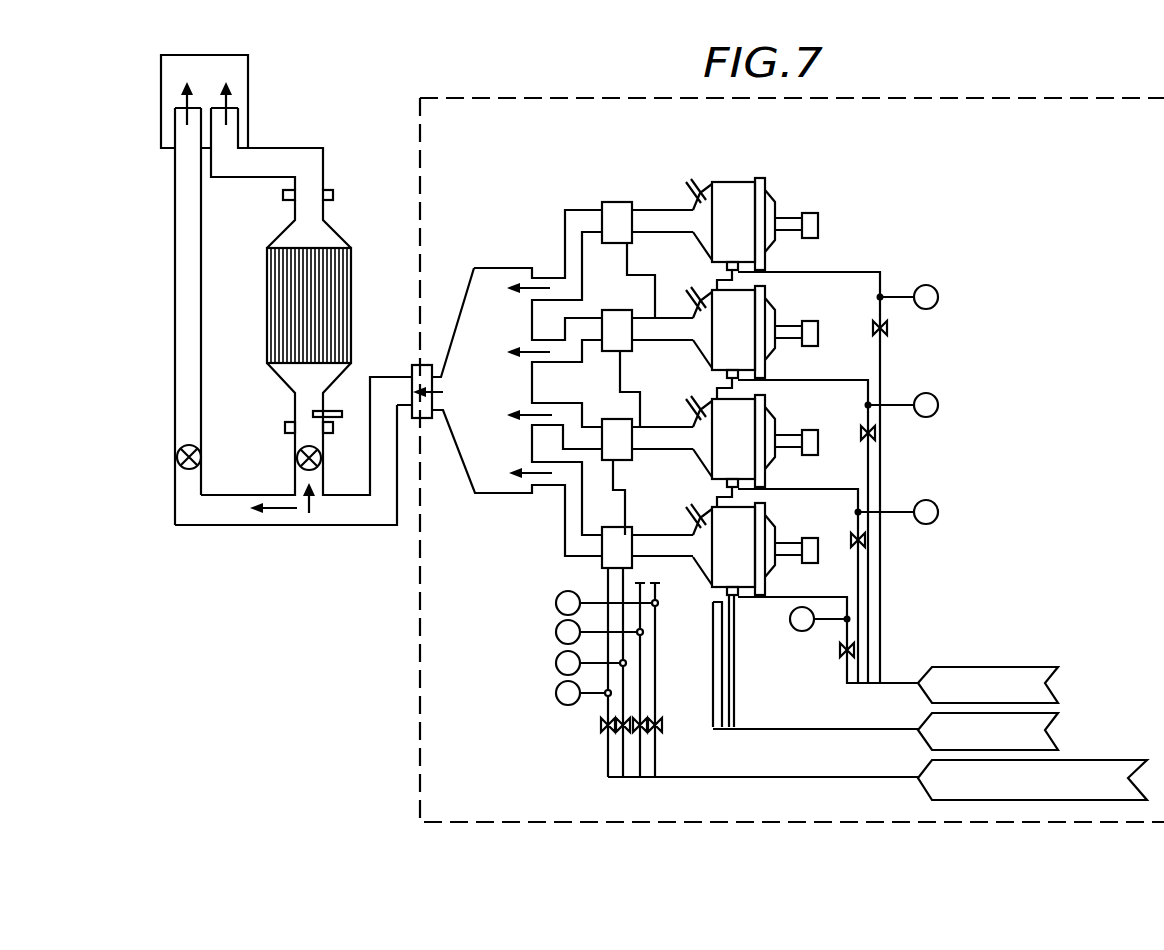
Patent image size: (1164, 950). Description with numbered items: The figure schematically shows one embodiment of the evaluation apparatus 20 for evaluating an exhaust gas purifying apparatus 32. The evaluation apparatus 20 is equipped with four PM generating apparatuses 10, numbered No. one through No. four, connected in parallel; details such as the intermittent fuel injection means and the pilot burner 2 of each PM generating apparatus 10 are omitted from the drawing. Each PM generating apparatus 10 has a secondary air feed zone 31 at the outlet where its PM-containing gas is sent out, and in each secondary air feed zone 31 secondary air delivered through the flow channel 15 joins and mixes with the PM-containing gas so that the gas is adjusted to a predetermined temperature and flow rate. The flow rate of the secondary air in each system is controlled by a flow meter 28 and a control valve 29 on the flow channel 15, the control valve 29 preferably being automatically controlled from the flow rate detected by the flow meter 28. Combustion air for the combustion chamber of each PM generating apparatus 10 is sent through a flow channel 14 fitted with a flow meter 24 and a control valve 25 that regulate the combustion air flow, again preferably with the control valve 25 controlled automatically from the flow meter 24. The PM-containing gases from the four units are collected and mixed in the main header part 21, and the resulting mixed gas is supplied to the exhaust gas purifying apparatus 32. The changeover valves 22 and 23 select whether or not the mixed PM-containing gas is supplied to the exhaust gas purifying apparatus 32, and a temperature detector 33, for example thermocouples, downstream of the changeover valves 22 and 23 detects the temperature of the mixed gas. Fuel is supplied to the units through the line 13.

The pilot burner 2 is at (810, 564).
The PM generating apparatus 10 is at (780, 516).
The fuel supply line 13 is at (871, 729).
The flow channel of combustion air 14 is at (895, 683).
The flow channel of secondary air 15 is at (862, 778).
The evaluation apparatus 20 is at (506, 143).
The main header part 21 is at (497, 297).
The changeover valve 22 is at (177, 457).
The changeover valve 23 is at (297, 458).
The flow meter 24 is at (795, 629).
The control valve 25 is at (840, 656).
The flow meter 28 is at (556, 694).
The control valve 29 is at (670, 733).
The secondary air feed zone 31 is at (609, 537).
The exhaust gas purifying apparatus 32 is at (351, 265).
The temperature detector 33 is at (318, 412).